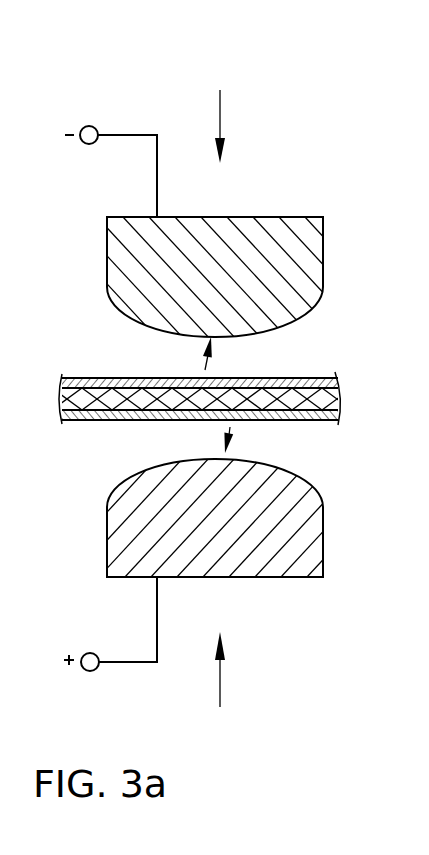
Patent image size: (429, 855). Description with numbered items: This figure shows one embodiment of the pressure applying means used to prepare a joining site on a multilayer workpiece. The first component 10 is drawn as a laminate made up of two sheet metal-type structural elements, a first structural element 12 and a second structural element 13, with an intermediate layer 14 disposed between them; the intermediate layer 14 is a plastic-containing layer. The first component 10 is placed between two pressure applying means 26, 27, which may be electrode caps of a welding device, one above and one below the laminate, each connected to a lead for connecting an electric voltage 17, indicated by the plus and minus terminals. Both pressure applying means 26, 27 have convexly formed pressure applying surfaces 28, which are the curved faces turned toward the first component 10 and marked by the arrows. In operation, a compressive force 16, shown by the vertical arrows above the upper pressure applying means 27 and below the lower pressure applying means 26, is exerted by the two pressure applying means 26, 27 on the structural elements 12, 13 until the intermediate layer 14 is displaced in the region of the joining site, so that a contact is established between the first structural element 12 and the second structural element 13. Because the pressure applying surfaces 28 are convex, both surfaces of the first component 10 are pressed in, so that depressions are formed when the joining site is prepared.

The first component 10 is at (88, 448).
The first structural element 12 is at (301, 417).
The second structural element 13 is at (288, 383).
The intermediate layer 14 is at (323, 398).
The compressive force 16 is at (220, 122).
The electric voltage connection 17 is at (91, 125).
The pressure applying means 26 is at (107, 548).
The pressure applying means 27 is at (269, 218).
The pressure applying surface 28 is at (205, 370).